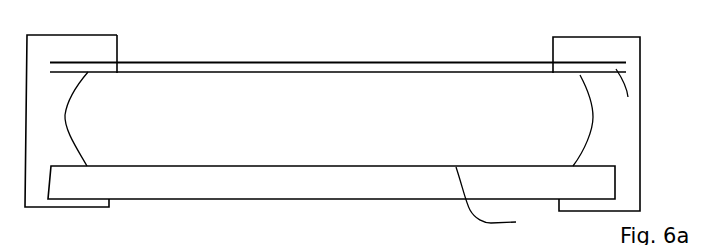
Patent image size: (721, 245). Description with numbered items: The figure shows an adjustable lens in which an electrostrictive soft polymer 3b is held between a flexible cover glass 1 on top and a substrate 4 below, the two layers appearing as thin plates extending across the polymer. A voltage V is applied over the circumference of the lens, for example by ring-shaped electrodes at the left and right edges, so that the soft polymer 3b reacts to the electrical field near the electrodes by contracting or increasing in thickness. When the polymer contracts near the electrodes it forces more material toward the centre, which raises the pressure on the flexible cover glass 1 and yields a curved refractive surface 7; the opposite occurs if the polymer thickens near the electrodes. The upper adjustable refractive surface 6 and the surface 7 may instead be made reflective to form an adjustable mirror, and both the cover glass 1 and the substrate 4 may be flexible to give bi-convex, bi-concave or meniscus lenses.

The voltage V is at (341, 123).
The adjustable refractive surface 6 is at (357, 62).
The substrate 4 is at (605, 178).
The electrostrictive soft polymer 3b is at (329, 119).
The cover glass 1 is at (625, 98).
The curved refractive surface 7 is at (492, 198).